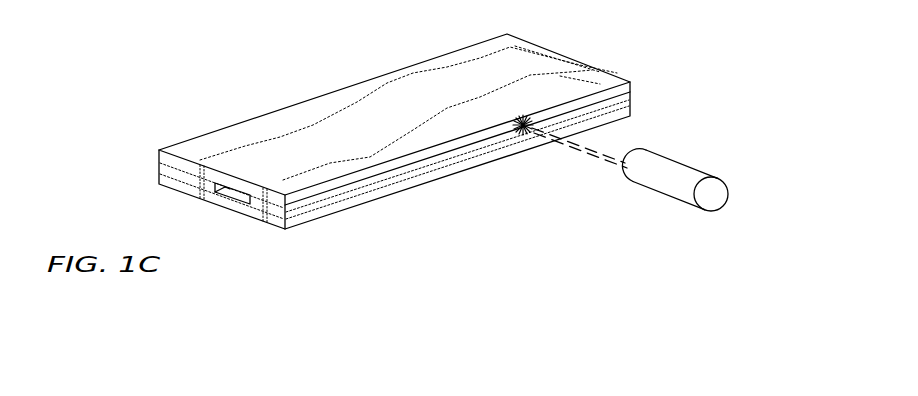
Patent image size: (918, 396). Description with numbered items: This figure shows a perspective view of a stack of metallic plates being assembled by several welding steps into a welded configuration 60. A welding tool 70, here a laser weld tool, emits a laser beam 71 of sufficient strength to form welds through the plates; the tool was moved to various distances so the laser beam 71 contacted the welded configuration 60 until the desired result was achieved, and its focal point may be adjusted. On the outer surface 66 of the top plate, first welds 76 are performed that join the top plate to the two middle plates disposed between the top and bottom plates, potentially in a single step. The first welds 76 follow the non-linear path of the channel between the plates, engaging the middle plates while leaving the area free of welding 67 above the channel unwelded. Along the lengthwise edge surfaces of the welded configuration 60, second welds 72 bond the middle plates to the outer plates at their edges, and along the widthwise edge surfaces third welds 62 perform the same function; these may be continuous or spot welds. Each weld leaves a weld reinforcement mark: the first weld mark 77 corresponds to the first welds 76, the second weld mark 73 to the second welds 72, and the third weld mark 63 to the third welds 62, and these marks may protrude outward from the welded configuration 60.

The welded configuration 60 is at (154, 121).
The third welds 62 is at (149, 181).
The third weld mark 63 is at (277, 208).
The outer surface 66 is at (377, 122).
The area free of welding 67 is at (331, 160).
The welding tool 70 is at (678, 165).
The laser beam 71 is at (583, 153).
The second welds 72 is at (442, 173).
The second weld mark 73 is at (370, 190).
The first welds 76 is at (543, 68).
The first weld mark 77 is at (570, 71).